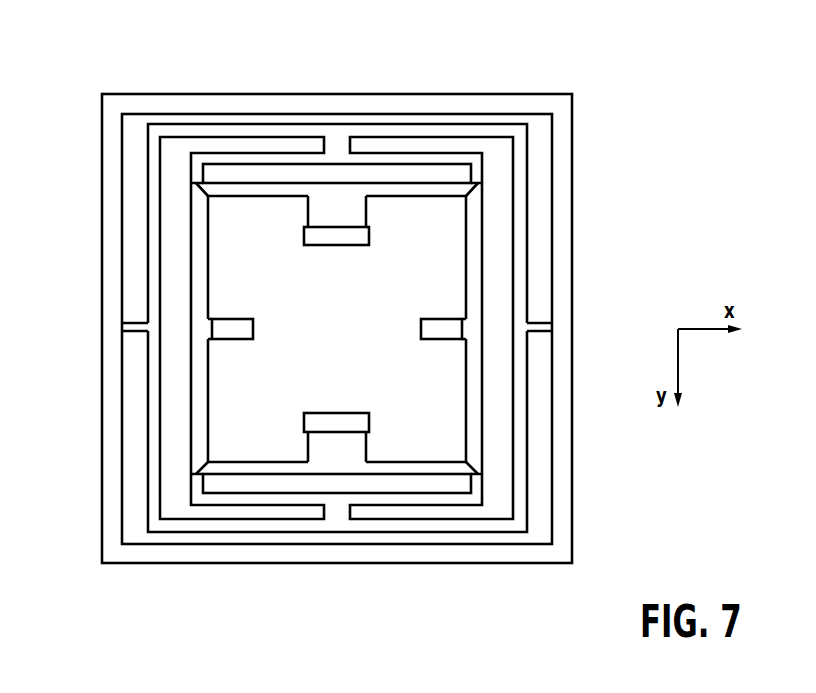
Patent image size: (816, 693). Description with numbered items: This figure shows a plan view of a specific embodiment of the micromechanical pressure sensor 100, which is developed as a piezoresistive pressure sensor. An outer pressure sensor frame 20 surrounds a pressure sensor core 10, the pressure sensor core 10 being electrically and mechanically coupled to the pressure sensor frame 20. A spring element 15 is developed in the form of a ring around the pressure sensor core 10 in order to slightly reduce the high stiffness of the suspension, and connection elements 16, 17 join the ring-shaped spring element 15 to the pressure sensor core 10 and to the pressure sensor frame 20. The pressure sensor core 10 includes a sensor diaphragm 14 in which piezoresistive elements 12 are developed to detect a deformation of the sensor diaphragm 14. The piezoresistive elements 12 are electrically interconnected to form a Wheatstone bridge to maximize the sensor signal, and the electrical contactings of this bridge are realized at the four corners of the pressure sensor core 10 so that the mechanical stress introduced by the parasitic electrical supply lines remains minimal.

The micromechanical pressure sensor 100 is at (111, 573).
The pressure sensor frame 20 is at (572, 215).
The spring element 15 is at (527, 479).
The pressure sensor core 10 is at (191, 246).
The sensor diaphragm 14 is at (350, 343).
The piezoresistive elements 12 is at (304, 235).
The connection element 16 is at (191, 168).
The connection element 17 is at (141, 322).